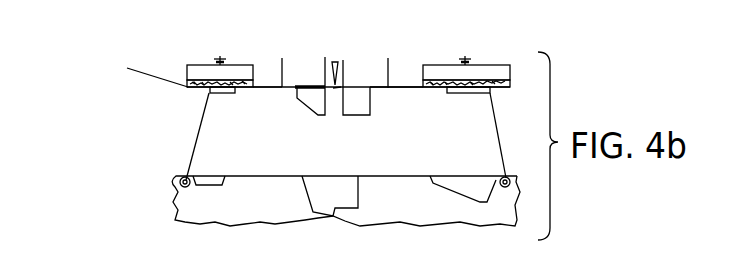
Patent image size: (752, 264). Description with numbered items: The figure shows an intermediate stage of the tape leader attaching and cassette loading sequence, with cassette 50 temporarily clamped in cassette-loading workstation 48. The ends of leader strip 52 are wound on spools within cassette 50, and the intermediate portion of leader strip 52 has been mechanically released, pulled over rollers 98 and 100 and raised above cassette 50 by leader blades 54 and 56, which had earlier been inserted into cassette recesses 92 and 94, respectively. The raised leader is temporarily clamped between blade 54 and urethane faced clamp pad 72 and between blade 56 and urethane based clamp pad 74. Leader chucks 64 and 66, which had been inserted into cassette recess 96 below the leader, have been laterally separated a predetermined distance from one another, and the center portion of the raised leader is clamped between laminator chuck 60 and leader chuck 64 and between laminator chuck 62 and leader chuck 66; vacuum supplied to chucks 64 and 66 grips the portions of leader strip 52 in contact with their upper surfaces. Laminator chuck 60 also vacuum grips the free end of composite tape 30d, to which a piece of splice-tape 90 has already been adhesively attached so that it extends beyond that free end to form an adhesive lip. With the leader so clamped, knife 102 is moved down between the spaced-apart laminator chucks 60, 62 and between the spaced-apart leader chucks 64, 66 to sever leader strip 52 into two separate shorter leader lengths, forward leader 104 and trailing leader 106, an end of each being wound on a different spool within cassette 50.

The composite tape 30d is at (137, 54).
The cassette-loading workstation 48 is at (130, 126).
The cassette 50 is at (173, 208).
The leader strip 52 is at (404, 82).
The leader blade 54 is at (219, 93).
The leader blade 56 is at (485, 93).
The laminator chuck 60 is at (293, 72).
The laminator chuck 62 is at (375, 72).
The leader chuck 64 is at (308, 97).
The leader chuck 66 is at (362, 105).
The urethane faced clamp pad 72 is at (198, 66).
The urethane based clamp pad 74 is at (490, 70).
The splice-tape 90 is at (320, 82).
The cassette recess 92 is at (205, 184).
The cassette recess 94 is at (463, 187).
The cassette recess 96 is at (312, 192).
The roller 98 is at (188, 178).
The roller 100 is at (503, 177).
The knife 102 is at (342, 58).
The forward leader 104 is at (415, 88).
The trailing leader 106 is at (267, 88).